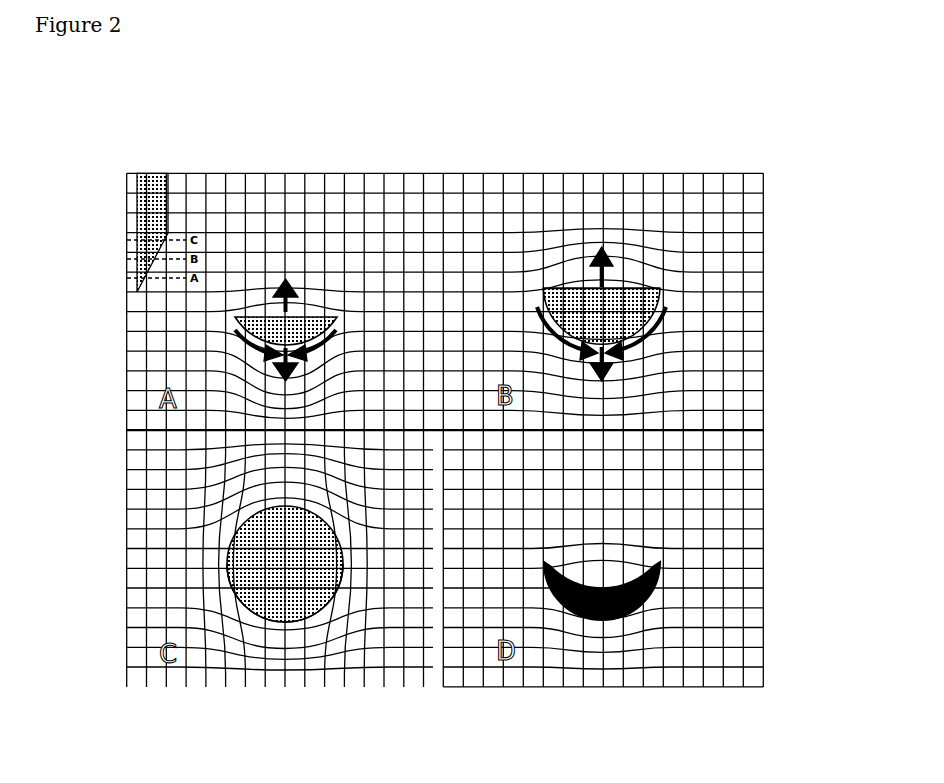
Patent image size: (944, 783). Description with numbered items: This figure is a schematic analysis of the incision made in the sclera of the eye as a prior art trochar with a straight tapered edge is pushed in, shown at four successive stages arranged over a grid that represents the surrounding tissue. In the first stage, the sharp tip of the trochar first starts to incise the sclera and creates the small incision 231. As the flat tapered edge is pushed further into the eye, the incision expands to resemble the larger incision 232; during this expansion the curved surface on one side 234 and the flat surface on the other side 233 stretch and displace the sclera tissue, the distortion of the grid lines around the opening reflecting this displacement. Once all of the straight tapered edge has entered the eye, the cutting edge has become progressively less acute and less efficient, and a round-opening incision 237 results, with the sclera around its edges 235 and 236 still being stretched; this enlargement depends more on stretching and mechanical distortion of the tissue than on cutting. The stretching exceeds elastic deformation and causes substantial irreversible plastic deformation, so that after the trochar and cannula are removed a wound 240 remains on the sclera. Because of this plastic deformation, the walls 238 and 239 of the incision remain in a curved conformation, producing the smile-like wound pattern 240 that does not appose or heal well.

In FIG. 2A, the incision 231 is at (307, 320).
In FIG. 2B, the expanded incision 232 is at (638, 297).
In FIG. 2B, the flat surface 233 is at (563, 287).
In FIG. 2B, the curved surface 234 is at (660, 305).
In FIG. 2C, the edge of incision 235 is at (277, 510).
In FIG. 2C, the edge of incision 236 is at (248, 610).
In FIG. 2C, the round-opening incision 237 is at (327, 605).
In FIG. 2D, the incision wall 238 is at (578, 607).
In FIG. 2D, the incision wall 239 is at (607, 583).
In FIG. 2D, the wound 240 is at (625, 605).